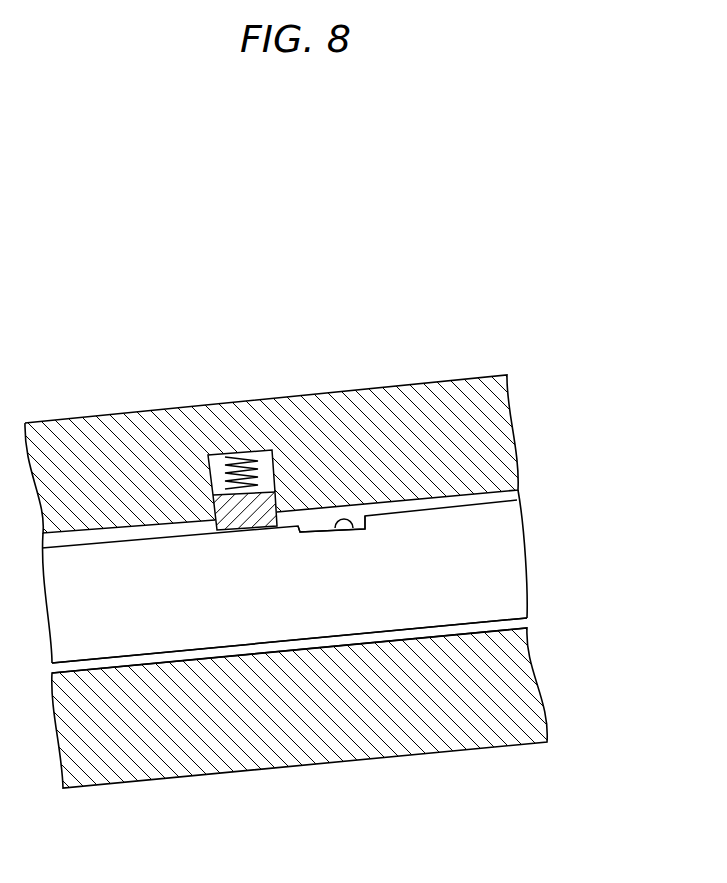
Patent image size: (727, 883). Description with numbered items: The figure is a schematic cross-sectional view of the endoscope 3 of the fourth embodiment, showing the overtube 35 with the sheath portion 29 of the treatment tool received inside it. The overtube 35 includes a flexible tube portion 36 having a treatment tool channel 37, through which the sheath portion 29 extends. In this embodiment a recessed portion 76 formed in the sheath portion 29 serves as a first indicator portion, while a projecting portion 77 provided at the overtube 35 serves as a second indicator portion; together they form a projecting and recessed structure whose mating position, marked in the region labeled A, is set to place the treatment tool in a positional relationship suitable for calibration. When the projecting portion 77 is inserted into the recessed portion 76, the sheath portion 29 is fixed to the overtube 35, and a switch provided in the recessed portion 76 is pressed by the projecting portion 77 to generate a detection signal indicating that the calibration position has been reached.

The endoscope 3 is at (398, 262).
The overtube 35 is at (450, 377).
The projecting portion 77 is at (220, 528).
The sheath portion 29 is at (418, 603).
The gap region A is at (321, 511).
The recessed portion 76 is at (347, 530).
The treatment tool channel 37 is at (166, 666).
The flexible tube portion 36 is at (262, 715).